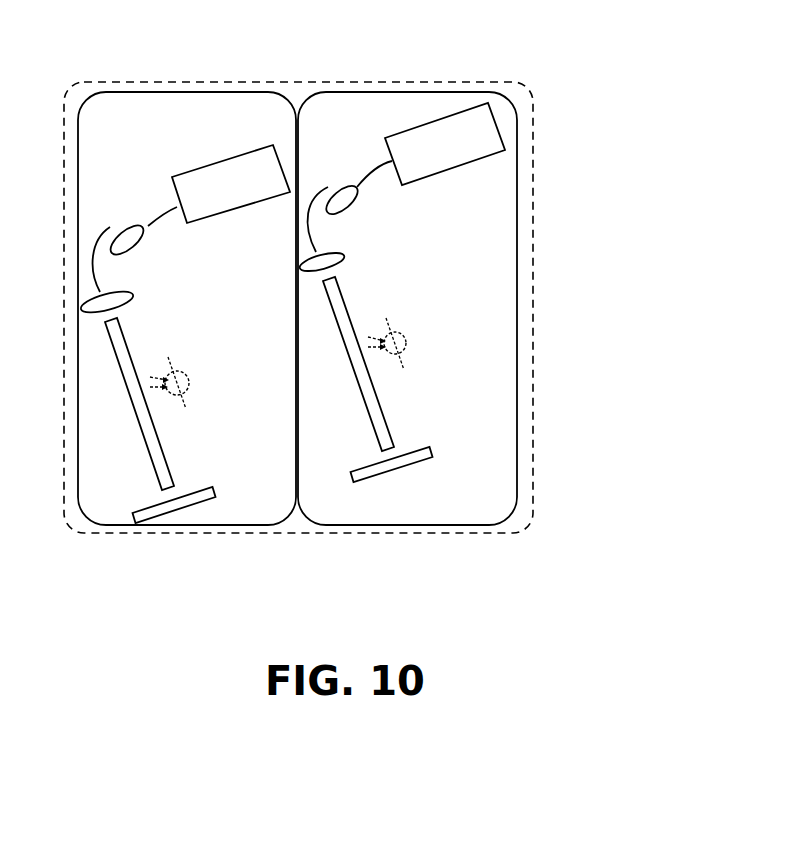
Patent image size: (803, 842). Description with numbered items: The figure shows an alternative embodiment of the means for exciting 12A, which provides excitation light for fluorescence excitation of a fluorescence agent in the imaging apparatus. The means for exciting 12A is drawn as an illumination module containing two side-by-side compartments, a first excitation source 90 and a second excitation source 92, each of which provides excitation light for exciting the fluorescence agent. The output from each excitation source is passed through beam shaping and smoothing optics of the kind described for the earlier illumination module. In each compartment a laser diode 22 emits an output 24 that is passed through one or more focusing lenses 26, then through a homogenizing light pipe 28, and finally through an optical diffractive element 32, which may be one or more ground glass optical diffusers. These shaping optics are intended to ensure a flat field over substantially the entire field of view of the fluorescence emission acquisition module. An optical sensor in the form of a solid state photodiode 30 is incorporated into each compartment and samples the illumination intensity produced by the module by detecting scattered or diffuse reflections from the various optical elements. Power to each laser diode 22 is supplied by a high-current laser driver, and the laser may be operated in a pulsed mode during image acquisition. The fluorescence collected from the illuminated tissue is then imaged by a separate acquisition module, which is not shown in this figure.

The means for exciting 12A is at (587, 62).
The first excitation source 90 is at (184, 92).
The second excitation source 92 is at (406, 92).
The laser diode 22 is at (203, 168).
The output 24 is at (140, 248).
The focusing lens 26 is at (130, 291).
The homogenizing light pipe 28 is at (162, 440).
The photodiode 30 is at (189, 381).
The optical diffractive element 32 is at (212, 490).